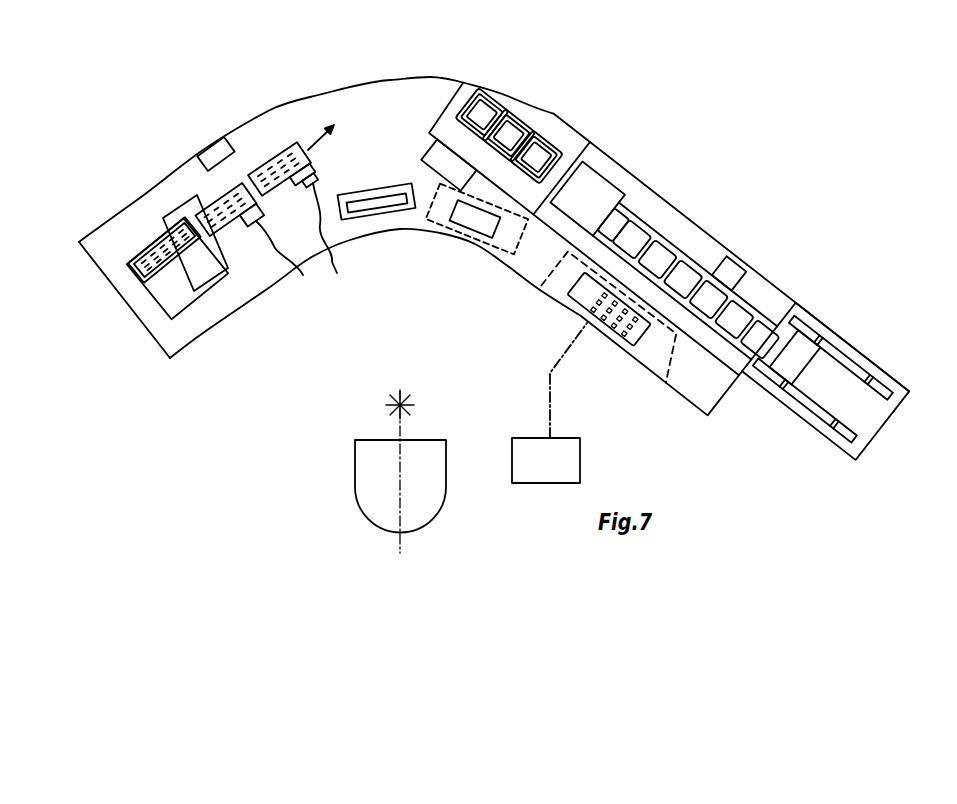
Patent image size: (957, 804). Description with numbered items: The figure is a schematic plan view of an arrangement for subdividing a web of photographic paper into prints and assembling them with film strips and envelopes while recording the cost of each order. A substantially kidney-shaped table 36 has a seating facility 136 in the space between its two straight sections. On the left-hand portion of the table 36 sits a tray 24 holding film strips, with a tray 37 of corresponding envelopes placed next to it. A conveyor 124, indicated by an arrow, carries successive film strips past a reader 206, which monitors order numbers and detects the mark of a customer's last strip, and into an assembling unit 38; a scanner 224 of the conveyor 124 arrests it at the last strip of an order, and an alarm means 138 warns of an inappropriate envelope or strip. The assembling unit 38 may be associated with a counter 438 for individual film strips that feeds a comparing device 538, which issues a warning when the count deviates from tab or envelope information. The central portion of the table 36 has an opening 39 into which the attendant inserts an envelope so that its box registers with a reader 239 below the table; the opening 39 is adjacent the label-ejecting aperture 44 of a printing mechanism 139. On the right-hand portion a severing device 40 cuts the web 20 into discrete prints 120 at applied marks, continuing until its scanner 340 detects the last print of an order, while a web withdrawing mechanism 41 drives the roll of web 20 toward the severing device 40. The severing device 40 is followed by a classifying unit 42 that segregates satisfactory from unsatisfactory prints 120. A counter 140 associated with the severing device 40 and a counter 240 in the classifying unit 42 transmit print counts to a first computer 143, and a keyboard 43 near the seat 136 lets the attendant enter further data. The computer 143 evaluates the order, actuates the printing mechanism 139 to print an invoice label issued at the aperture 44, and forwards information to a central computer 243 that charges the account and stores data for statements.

The web 20 is at (752, 308).
The tray 24 is at (150, 246).
The table 36 is at (428, 86).
The tray 37 is at (218, 272).
The assembling unit 38 is at (270, 160).
The opening 39 is at (377, 214).
The severing device 40 is at (692, 227).
The web withdrawing mechanism 41 is at (887, 378).
The classifying unit 42 is at (568, 135).
The keyboard 43 is at (638, 349).
The label-ejecting aperture 44 is at (482, 230).
The prints 120 is at (540, 140).
The conveyor 124 is at (313, 140).
The seating facility 136 is at (437, 492).
The alarm means 138 is at (217, 145).
The printing mechanism 139 is at (520, 254).
The counter 140 is at (606, 165).
The first computer 143 is at (670, 353).
The reader 206 is at (180, 204).
The scanner 224 is at (290, 281).
The reader 239 is at (366, 192).
The counter 240 is at (470, 186).
The central computer 243 is at (564, 470).
The scanner 340 is at (728, 268).
The counter 438 is at (291, 258).
The comparing device 538 is at (341, 239).